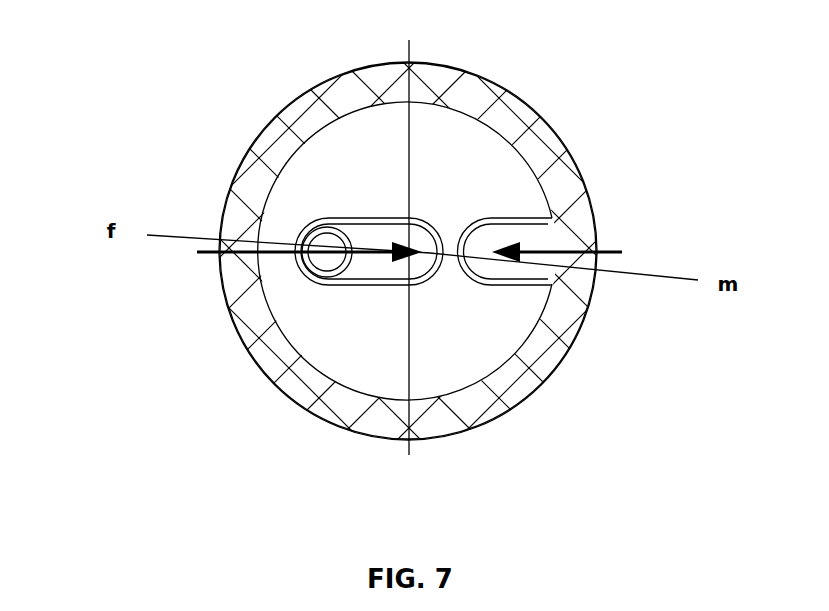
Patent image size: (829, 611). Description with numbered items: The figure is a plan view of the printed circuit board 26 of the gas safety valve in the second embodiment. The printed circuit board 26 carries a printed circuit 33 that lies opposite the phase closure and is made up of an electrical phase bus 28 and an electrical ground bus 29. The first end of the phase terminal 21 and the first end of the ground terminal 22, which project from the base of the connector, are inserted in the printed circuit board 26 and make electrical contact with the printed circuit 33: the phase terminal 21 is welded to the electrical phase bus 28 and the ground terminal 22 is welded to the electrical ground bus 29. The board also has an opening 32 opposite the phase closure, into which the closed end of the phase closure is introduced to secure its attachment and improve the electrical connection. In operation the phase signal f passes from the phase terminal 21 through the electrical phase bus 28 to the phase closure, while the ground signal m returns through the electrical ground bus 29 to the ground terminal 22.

The printed circuit board 26 is at (141, 161).
The printed circuit 33 is at (600, 189).
The electrical ground bus 29 is at (553, 353).
The electrical phase bus 28 is at (363, 278).
The opening 32 is at (413, 262).
The phase terminal 21 is at (332, 262).
The ground terminal 22 is at (493, 265).